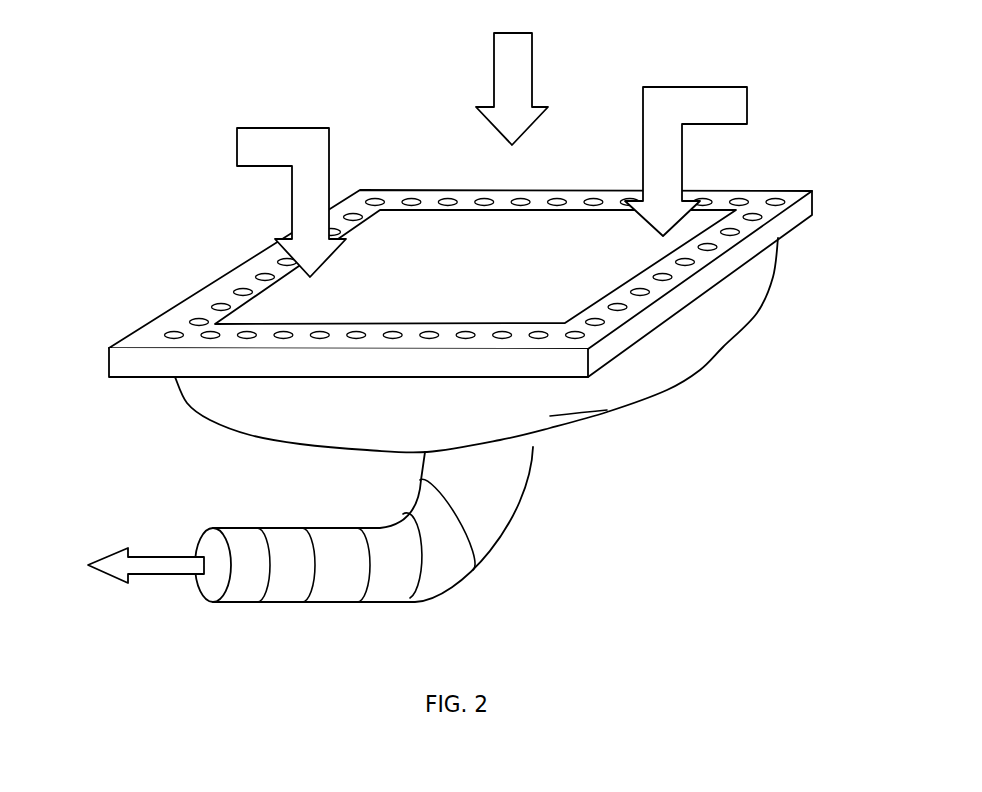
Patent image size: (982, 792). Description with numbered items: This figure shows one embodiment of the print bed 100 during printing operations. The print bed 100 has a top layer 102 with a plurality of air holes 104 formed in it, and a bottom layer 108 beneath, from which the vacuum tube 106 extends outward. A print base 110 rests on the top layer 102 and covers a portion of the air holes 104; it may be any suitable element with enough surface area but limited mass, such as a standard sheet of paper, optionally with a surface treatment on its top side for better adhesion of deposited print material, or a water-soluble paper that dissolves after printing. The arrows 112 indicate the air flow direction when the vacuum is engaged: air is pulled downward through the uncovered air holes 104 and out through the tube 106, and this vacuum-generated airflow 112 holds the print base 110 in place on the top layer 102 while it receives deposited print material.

The print bed 100 is at (182, 172).
The top layer 102 is at (451, 261).
The air holes 104 is at (776, 195).
The vacuum tube 106 is at (525, 500).
The bottom layer 108 is at (795, 246).
The print base 110 is at (513, 220).
The arrows 112 is at (268, 128).